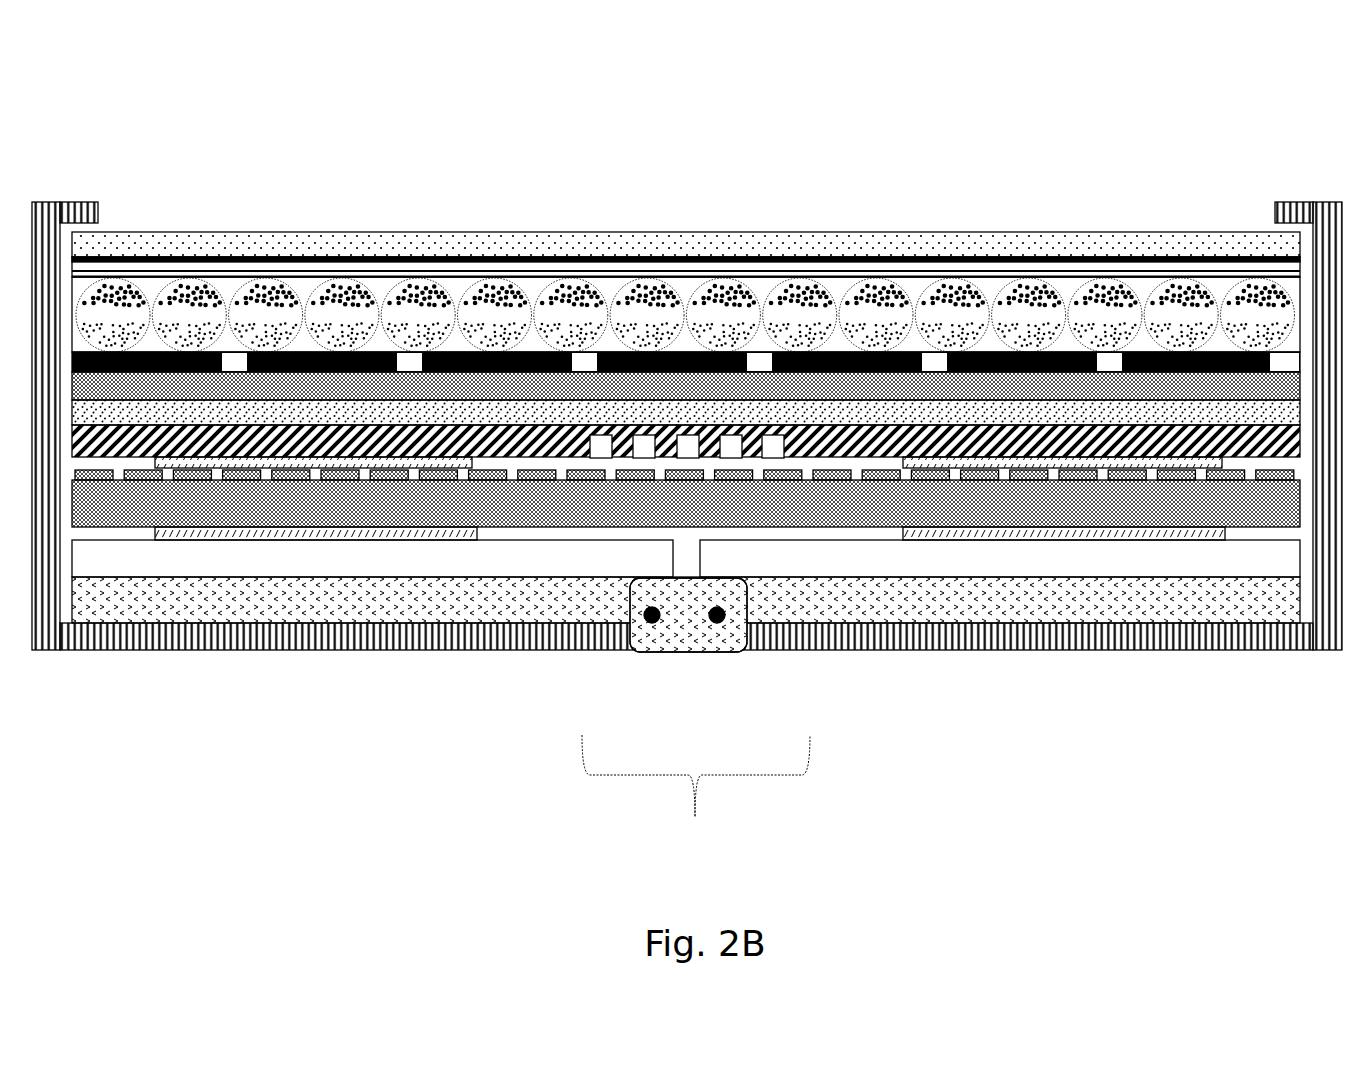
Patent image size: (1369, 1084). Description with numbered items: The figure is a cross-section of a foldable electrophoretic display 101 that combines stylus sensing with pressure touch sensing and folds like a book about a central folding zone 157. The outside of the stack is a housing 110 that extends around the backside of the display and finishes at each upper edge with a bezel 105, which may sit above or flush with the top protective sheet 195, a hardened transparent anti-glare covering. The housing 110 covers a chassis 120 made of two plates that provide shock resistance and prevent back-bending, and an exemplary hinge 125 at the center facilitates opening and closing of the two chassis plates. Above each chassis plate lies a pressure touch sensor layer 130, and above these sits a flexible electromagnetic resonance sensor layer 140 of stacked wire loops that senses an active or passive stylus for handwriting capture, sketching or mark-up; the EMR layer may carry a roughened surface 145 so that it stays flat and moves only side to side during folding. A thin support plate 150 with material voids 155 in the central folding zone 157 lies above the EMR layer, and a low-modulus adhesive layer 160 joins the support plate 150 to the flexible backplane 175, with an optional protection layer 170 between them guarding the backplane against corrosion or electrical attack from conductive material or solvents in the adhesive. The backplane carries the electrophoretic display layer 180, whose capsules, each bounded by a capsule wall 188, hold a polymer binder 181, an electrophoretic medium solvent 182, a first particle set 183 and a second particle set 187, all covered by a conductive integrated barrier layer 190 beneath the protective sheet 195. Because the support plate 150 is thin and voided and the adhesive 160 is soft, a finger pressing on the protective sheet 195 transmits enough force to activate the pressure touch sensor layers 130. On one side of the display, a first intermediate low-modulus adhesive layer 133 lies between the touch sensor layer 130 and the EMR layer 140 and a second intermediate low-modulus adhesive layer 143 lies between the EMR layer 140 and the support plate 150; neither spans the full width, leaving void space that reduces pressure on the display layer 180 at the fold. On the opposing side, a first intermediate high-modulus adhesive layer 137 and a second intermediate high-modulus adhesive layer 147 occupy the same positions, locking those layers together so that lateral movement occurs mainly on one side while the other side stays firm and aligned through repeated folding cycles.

The foldable electrophoretic display 101 is at (256, 78).
The bezel 105 is at (68, 198).
The housing 110 is at (92, 628).
The chassis 120 is at (244, 600).
The hinge 125 is at (697, 648).
The pressure touch sensor layers 130 is at (432, 558).
The first intermediate low-modulus adhesive layer 133 is at (318, 535).
The first intermediate high-modulus adhesive layer 137 is at (1035, 537).
The flexible electromagnetic resonance sensor layer 140 is at (837, 497).
The second intermediate low-modulus adhesive layer 143 is at (460, 462).
The roughened surface 145 is at (908, 472).
The second intermediate high-modulus adhesive layer 147 is at (1127, 467).
The support plate 150 is at (283, 440).
The material voids 155 is at (768, 448).
The central folding zone 157 is at (696, 801).
The low-modulus adhesive layer 160 is at (405, 410).
The protection layer 170 is at (500, 385).
The flexible backplane 175 is at (605, 360).
The electrophoretic display layer 180 is at (1063, 288).
The polymer binder 181 is at (762, 343).
The electrophoretic medium solvent 182 is at (858, 318).
The first particle set 183 is at (942, 325).
The second particle set 187 is at (953, 285).
The capsule wall 188 is at (1025, 275).
The conductive integrated barrier layer 190 is at (1137, 262).
The top protective sheet 195 is at (1207, 237).